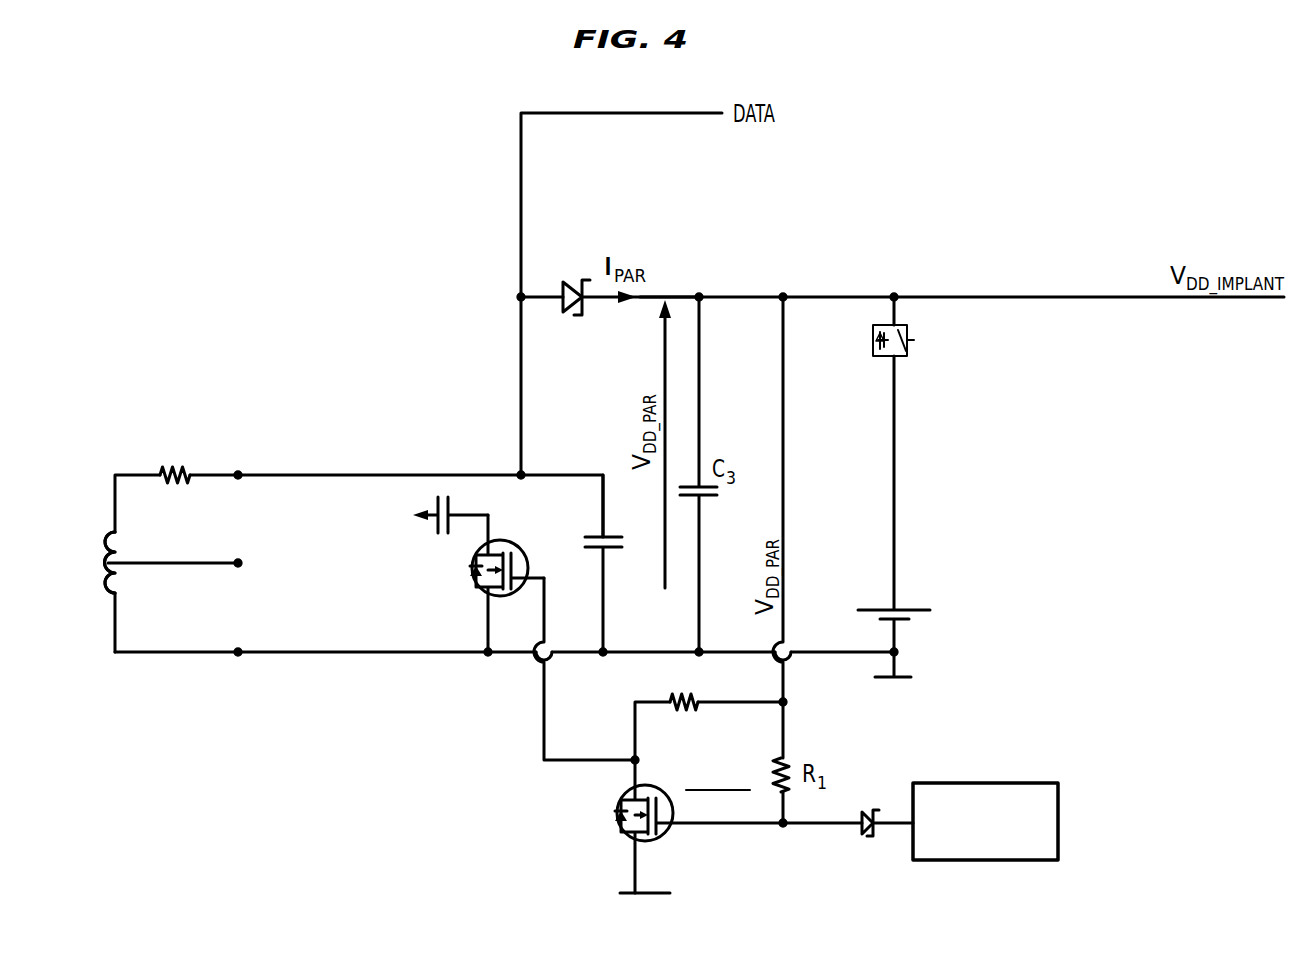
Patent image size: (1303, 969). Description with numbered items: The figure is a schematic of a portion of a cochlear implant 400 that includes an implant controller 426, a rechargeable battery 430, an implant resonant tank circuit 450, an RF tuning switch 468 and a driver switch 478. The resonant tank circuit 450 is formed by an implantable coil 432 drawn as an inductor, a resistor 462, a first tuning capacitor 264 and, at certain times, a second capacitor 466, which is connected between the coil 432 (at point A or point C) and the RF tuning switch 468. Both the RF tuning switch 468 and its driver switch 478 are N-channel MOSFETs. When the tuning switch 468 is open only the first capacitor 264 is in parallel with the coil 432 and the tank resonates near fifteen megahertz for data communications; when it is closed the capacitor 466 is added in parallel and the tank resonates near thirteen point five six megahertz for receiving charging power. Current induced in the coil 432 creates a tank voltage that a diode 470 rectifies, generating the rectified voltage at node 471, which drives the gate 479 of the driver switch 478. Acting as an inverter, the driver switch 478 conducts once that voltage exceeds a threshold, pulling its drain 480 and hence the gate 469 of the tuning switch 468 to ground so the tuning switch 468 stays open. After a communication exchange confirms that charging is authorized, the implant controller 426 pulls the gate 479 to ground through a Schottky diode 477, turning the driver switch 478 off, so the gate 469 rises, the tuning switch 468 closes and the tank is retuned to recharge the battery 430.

The cochlear implant 400 is at (393, 840).
The implant controller 426 is at (1060, 822).
The rechargeable battery 430 is at (962, 604).
The implantable coil 432 is at (108, 594).
The implant resonant tank circuit 450 is at (327, 421).
The resistor 462 is at (162, 470).
The capacitor 466 is at (437, 531).
The RF tuning switch 468 is at (468, 622).
The gate 469 is at (528, 552).
The diode 470 is at (575, 311).
The rectified tank voltage node 471 is at (650, 296).
The tuning capacitor C1 264 is at (614, 550).
The Schottky diode 477 is at (862, 829).
The driver switch 478 is at (626, 833).
The gate 479 is at (684, 774).
The drain 480 is at (626, 744).